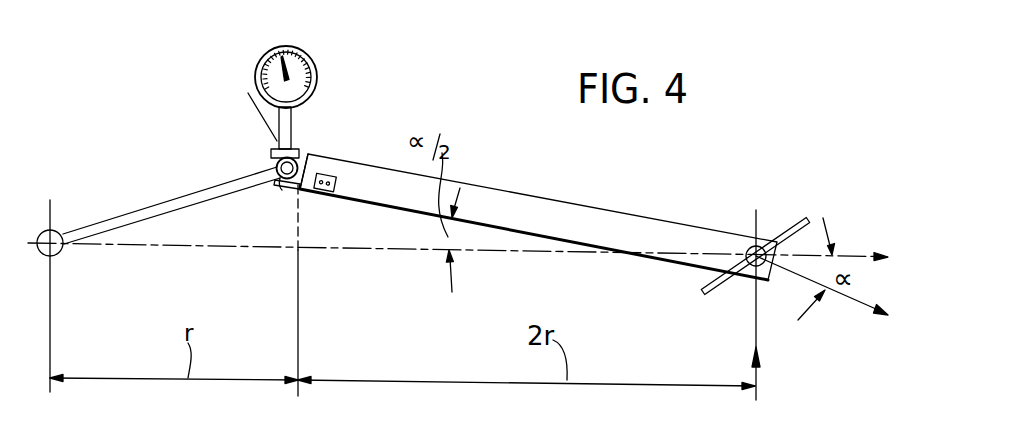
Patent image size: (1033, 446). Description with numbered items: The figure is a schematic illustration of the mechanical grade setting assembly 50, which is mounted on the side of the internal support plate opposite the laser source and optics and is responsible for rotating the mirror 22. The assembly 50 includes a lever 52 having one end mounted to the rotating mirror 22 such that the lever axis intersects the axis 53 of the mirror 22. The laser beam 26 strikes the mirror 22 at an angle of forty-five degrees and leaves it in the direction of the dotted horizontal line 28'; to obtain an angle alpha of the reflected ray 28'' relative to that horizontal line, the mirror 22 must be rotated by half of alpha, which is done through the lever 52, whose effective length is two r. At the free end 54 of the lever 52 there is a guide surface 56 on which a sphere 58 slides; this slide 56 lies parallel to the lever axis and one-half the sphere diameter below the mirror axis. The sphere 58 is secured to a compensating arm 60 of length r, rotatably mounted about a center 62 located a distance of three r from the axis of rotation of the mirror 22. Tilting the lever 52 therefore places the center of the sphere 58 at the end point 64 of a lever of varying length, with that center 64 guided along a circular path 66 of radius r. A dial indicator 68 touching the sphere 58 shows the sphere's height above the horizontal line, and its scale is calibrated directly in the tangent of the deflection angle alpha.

The rotating mirror 22 is at (800, 220).
The laser beam 26 is at (757, 375).
The dotted horizontal line 28' is at (458, 229).
The reflected ray 28'' is at (822, 305).
The grade setting assembly 50 is at (529, 224).
The lever 52 is at (508, 203).
The axis of the rotatable mirror 53 is at (748, 250).
The free end of lever 54 is at (353, 199).
The guide surface 56 is at (297, 188).
The sphere 58 is at (298, 162).
The compensating arm 60 is at (157, 202).
The center 62 is at (58, 251).
The end point 64 is at (262, 178).
The circular path 66 is at (256, 108).
The dial indicator 68 is at (314, 62).